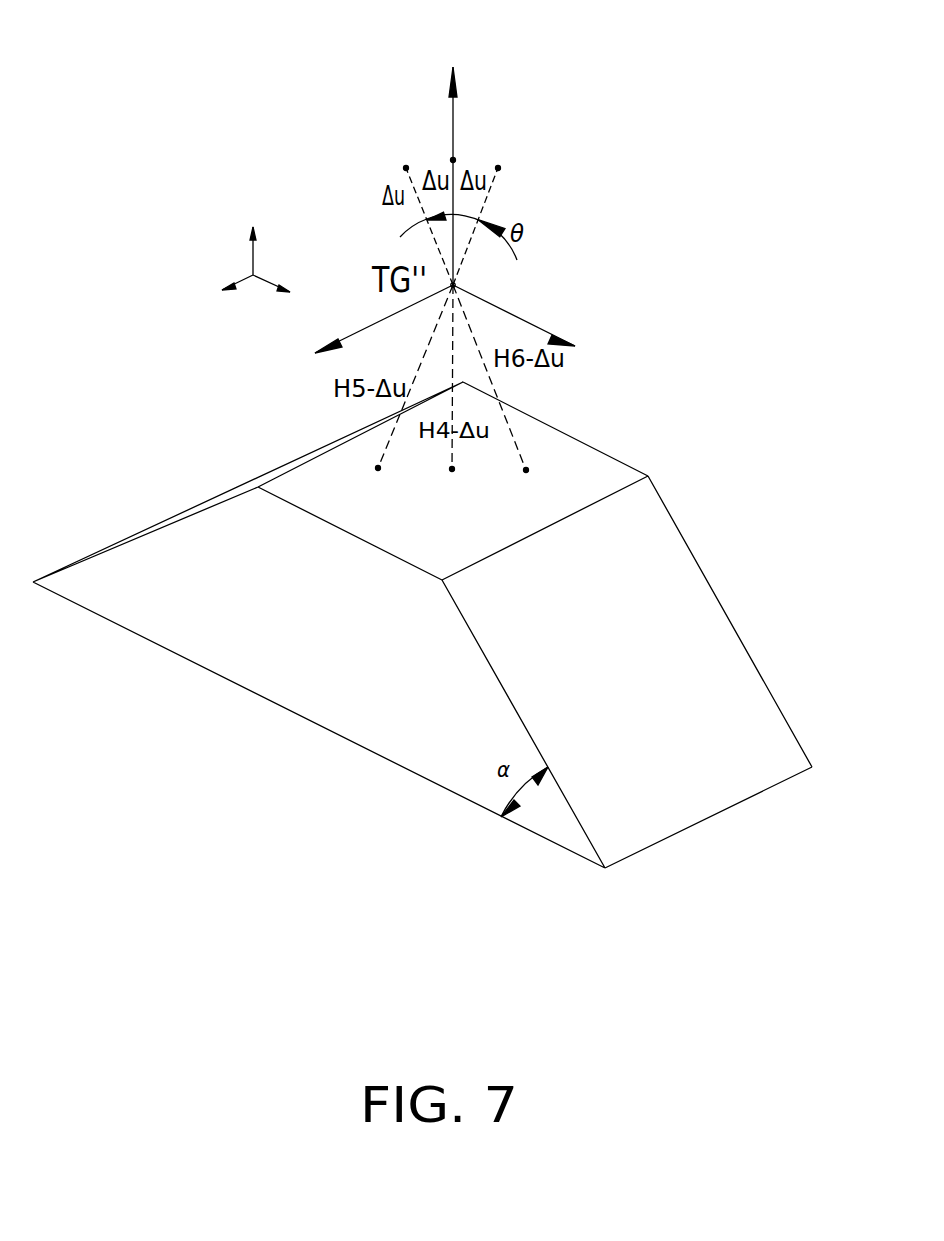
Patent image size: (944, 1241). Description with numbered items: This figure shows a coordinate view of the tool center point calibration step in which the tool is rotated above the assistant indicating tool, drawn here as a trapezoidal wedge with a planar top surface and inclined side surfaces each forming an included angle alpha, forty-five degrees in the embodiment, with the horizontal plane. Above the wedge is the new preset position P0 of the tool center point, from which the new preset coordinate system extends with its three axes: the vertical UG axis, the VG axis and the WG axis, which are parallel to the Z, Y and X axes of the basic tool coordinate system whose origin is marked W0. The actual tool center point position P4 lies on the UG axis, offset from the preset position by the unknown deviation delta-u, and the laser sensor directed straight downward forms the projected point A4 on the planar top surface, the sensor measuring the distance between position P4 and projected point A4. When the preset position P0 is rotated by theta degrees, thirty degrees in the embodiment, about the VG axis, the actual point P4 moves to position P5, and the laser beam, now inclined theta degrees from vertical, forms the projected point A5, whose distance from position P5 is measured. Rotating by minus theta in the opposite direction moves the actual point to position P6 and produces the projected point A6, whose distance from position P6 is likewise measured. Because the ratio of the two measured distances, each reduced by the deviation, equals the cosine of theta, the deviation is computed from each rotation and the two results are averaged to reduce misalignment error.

The new preset position of the TCP P0 is at (474, 279).
The actual position of the TCP P4 is at (438, 155).
The rotated TCP position P5 is at (486, 209).
The oppositely rotated TCP position P6 is at (406, 217).
The projected point A4 is at (463, 395).
The projected point A5 is at (405, 395).
The projected point A6 is at (507, 395).
The workpiece coordinate system origin W0 is at (249, 266).
The UG" axis UG is at (456, 148).
The VG" axis VG is at (363, 319).
The WG" axis WG is at (540, 315).
The assistant indicating tool wedge is at (422, 625).